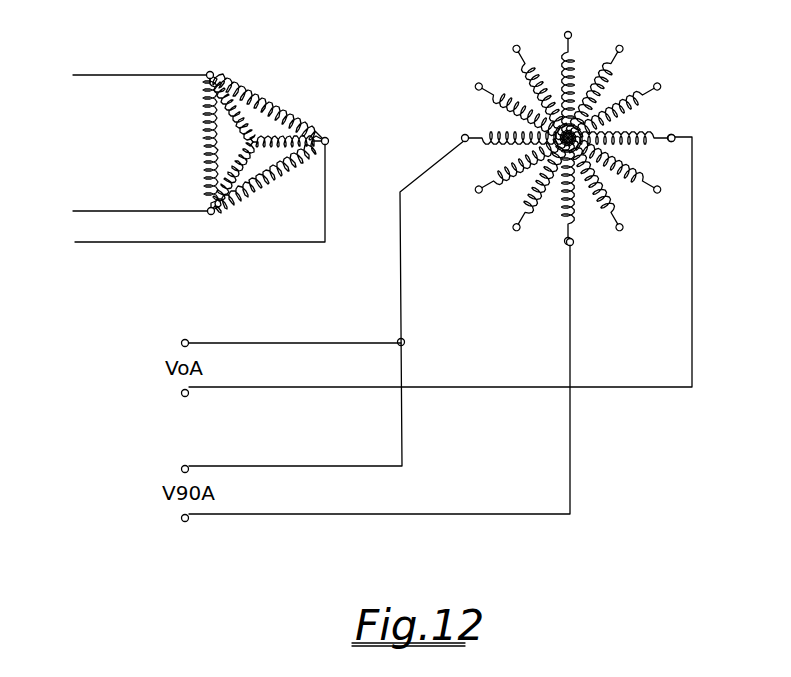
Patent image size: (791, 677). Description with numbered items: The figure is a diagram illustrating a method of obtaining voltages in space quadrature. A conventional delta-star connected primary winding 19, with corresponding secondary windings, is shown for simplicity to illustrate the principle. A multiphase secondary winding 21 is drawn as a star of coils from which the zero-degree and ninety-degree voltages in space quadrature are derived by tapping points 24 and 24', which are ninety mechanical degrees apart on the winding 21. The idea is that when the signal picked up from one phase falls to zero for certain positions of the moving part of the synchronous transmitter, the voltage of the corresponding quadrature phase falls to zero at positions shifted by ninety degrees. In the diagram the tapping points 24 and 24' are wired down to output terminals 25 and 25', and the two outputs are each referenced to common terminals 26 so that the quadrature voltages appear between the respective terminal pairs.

The delta-star connected primary winding 19 is at (249, 113).
The multiphase secondary winding 21 is at (483, 113).
The tapping point 24 is at (698, 120).
The tapping point 24' is at (599, 261).
The voltage terminal 25 is at (163, 407).
The voltage terminal 25' is at (159, 536).
The supply terminal 26 is at (181, 343).